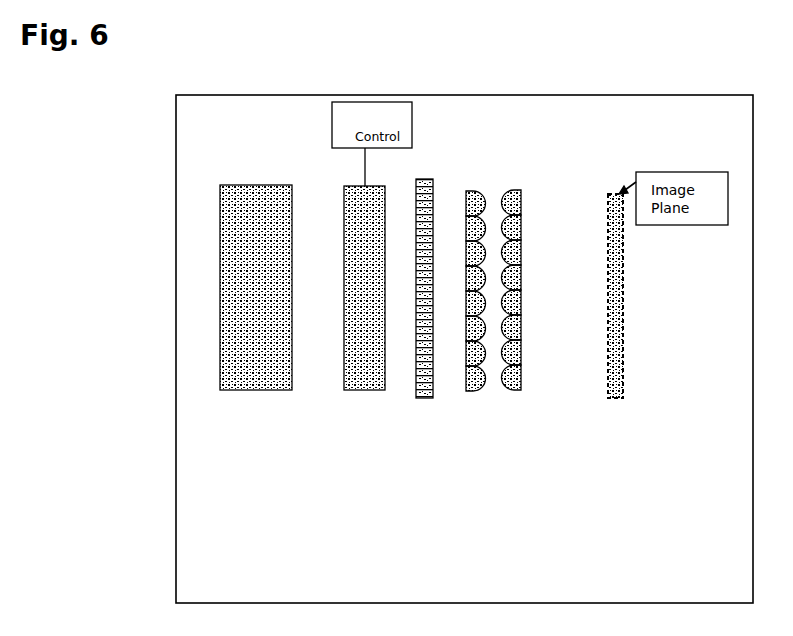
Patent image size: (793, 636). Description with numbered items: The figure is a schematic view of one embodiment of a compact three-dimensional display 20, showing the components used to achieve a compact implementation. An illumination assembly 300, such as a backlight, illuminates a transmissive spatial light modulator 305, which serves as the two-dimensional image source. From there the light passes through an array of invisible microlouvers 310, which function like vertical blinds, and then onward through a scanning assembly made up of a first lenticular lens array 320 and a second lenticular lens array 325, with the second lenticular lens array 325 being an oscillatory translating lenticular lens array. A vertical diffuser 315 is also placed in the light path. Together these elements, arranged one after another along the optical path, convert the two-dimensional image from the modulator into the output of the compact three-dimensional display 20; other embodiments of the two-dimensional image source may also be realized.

The 3D display 20 is at (618, 102).
The illumination assembly 300 is at (247, 389).
The transmissive spatial light modulator 305 is at (344, 214).
The array of invisible microlouvers 310 is at (420, 398).
The vertical diffuser 315 is at (613, 398).
The first lenticular lens array 320 is at (474, 390).
The second lenticular lens array 325 is at (513, 190).